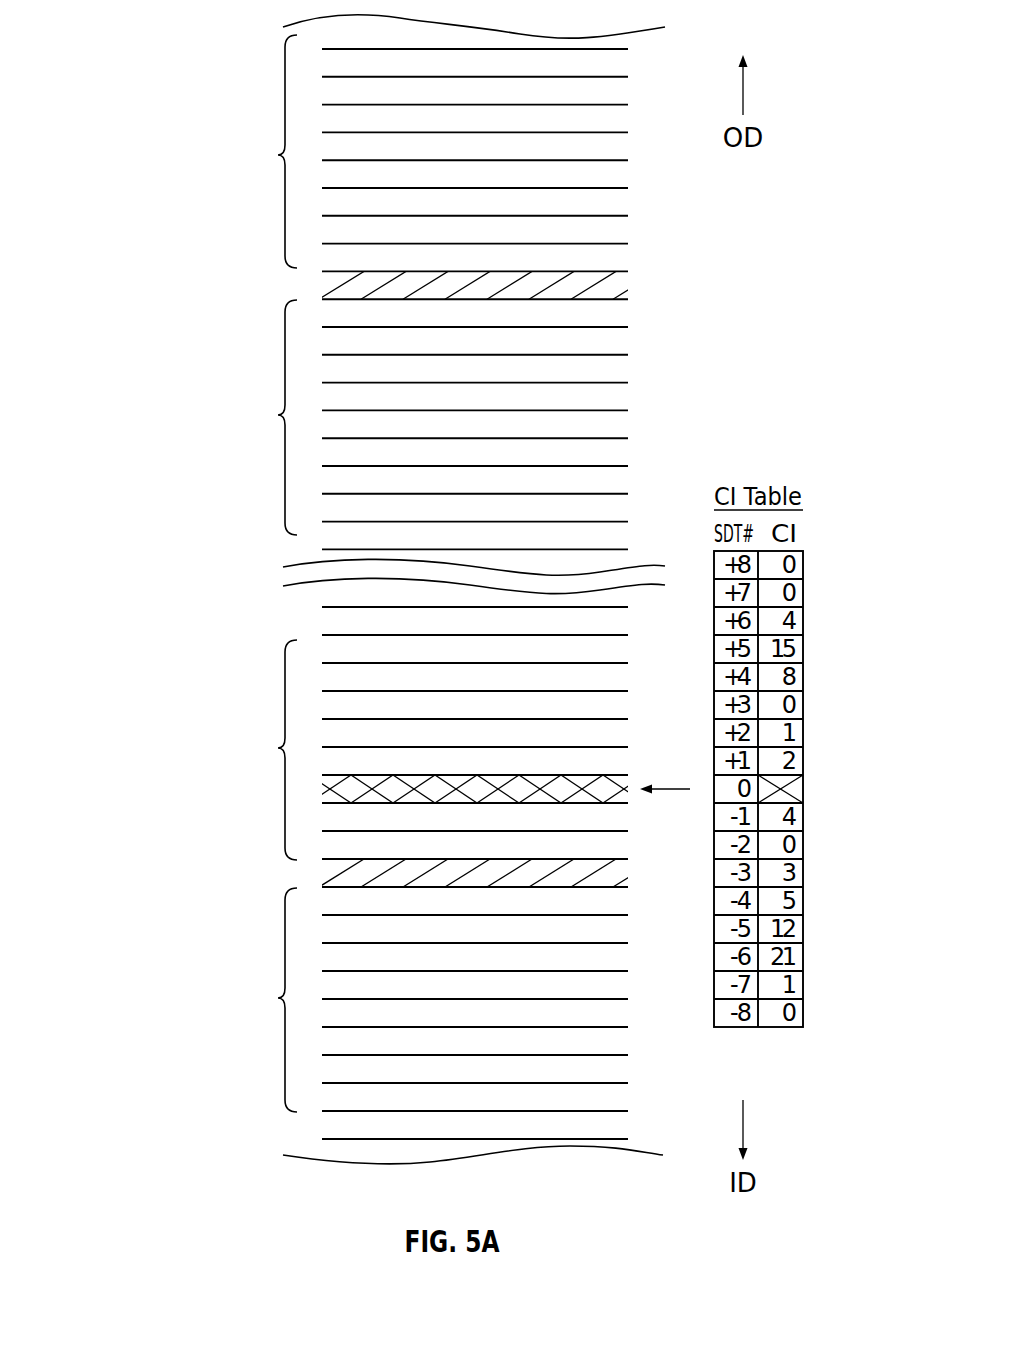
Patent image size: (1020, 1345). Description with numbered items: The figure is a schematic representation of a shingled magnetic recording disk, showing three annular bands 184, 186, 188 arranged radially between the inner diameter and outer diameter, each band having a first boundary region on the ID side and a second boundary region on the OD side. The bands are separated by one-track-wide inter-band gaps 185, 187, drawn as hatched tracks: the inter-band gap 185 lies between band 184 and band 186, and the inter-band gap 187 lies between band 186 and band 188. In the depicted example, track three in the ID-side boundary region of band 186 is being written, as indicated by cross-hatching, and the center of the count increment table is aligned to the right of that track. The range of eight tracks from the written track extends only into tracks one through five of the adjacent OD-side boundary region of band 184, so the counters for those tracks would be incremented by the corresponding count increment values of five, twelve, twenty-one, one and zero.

The annular band 188 is at (148, 58).
The inter-band gap 187 is at (62, 298).
The annular band 186 is at (148, 308).
The inter-band gap 185 is at (62, 887).
The annular band 184 is at (148, 897).